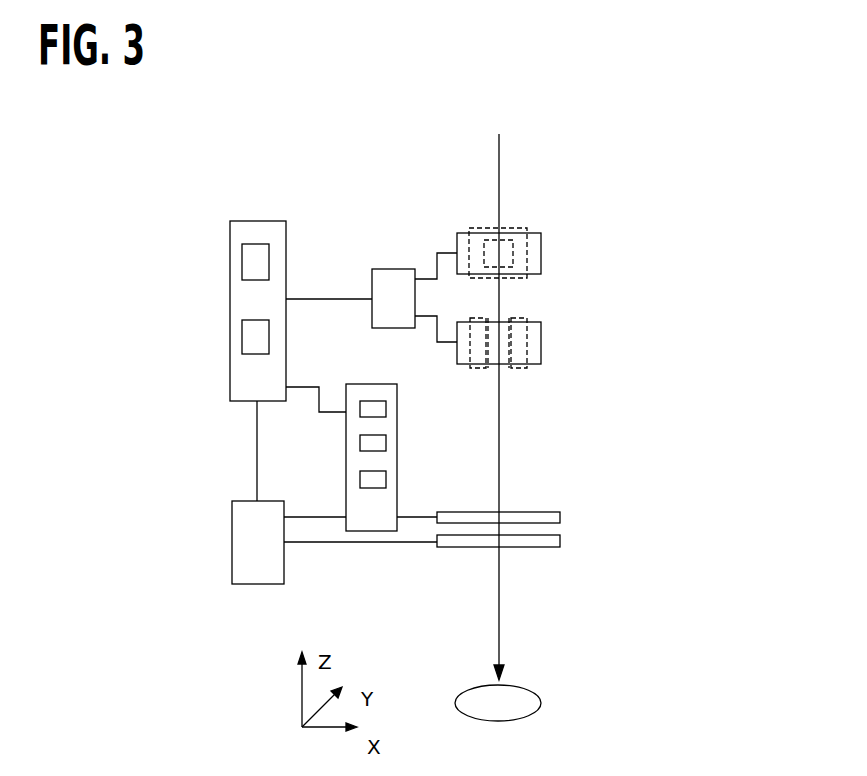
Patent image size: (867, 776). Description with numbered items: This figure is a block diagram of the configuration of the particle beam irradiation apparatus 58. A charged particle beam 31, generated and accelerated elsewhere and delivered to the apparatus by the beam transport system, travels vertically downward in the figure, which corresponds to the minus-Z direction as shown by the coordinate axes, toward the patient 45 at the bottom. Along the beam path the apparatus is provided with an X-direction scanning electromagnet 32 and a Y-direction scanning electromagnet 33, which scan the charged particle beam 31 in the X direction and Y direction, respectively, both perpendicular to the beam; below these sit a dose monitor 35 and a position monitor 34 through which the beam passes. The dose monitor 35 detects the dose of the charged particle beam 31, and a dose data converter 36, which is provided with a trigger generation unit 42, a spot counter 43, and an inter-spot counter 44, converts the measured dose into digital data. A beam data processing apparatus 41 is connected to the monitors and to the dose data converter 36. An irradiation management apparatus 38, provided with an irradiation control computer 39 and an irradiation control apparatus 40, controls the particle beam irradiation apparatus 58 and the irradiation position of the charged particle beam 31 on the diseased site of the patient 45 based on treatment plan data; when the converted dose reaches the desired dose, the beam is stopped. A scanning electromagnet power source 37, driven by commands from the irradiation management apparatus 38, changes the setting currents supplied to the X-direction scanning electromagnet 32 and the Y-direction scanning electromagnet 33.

The particle beam irradiation apparatus 58 is at (268, 108).
The charged particle beam 31 is at (499, 153).
The X-direction scanning electromagnet 32 is at (541, 252).
The Y-direction scanning electromagnet 33 is at (541, 340).
The position monitor 34 is at (560, 541).
The dose monitor 35 is at (560, 521).
The dose data converter 36 is at (358, 384).
The scanning electromagnet power source 37 is at (392, 269).
The irradiation management apparatus 38 is at (276, 221).
The irradiation control computer 39 is at (242, 255).
The irradiation control apparatus 40 is at (242, 332).
The beam data processing apparatus 41 is at (286, 566).
The trigger generation unit 42 is at (373, 401).
The spot counter 43 is at (360, 442).
The inter-spot counter 44 is at (360, 478).
The patient 45 is at (541, 703).